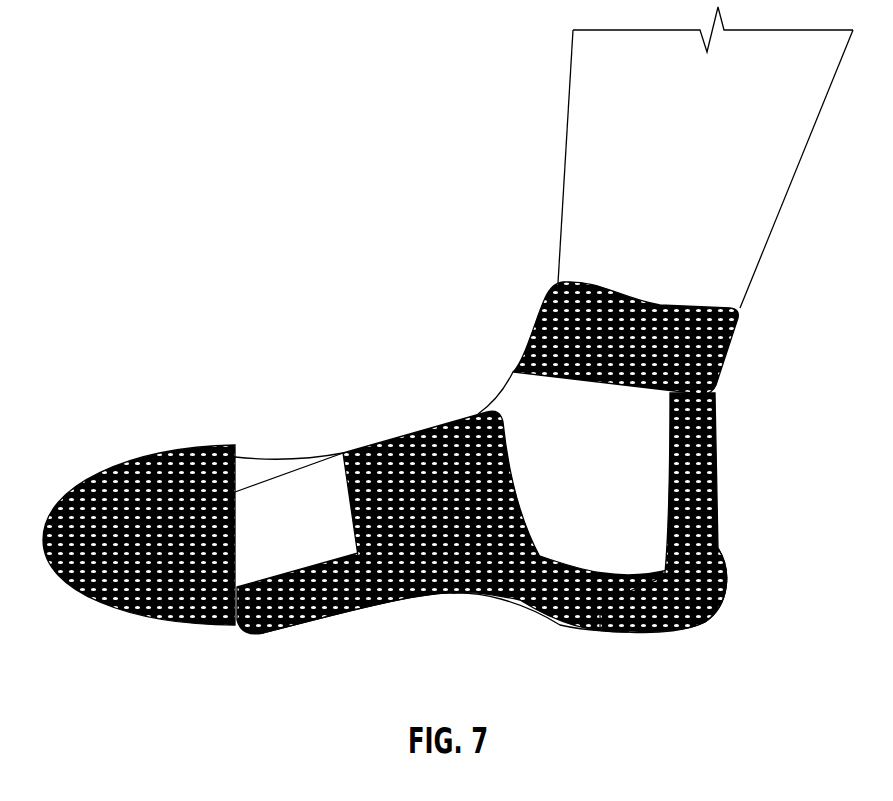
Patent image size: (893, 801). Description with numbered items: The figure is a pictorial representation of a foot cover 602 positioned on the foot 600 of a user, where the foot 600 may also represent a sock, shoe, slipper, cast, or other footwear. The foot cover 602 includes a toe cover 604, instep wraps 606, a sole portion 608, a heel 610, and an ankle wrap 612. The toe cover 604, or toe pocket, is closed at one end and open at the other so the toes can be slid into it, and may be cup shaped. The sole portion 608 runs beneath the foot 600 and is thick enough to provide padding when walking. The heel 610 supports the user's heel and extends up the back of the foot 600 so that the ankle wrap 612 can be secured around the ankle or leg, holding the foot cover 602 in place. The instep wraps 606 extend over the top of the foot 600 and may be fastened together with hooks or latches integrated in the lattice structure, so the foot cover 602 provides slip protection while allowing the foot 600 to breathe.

The foot 600 is at (303, 483).
The foot cover 602 is at (662, 627).
The toe cover 604 is at (135, 567).
The instep wraps 606 is at (413, 502).
The sole portion 608 is at (423, 577).
The heel 610 is at (673, 520).
The ankle wrap 612 is at (612, 353).